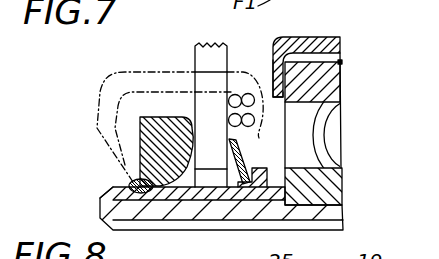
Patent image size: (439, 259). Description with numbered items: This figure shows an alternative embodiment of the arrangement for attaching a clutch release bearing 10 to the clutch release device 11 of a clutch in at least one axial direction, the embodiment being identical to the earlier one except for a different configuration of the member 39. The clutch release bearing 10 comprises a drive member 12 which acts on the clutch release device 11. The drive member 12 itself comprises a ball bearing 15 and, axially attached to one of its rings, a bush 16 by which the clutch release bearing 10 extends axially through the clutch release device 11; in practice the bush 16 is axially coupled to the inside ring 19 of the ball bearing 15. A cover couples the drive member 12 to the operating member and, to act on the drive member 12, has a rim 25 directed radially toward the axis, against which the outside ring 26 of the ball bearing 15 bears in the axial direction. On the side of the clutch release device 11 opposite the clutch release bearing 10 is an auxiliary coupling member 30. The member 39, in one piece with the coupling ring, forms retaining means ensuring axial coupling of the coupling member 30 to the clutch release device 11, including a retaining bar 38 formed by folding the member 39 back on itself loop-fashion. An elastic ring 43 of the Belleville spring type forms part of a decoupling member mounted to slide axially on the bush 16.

The clutch release bearing 10 is at (329, 33).
The clutch release device 11 is at (205, 42).
The drive member 12 is at (99, 207).
The ball bearing 15 is at (343, 60).
The bush 16 is at (183, 208).
The inside ring 19 is at (333, 192).
The rim 25 is at (276, 78).
The outside ring 26 is at (330, 79).
The coupling member 30 is at (136, 142).
The retaining bar 38 is at (253, 139).
The member 39 is at (100, 89).
The elastic ring 43 is at (233, 177).